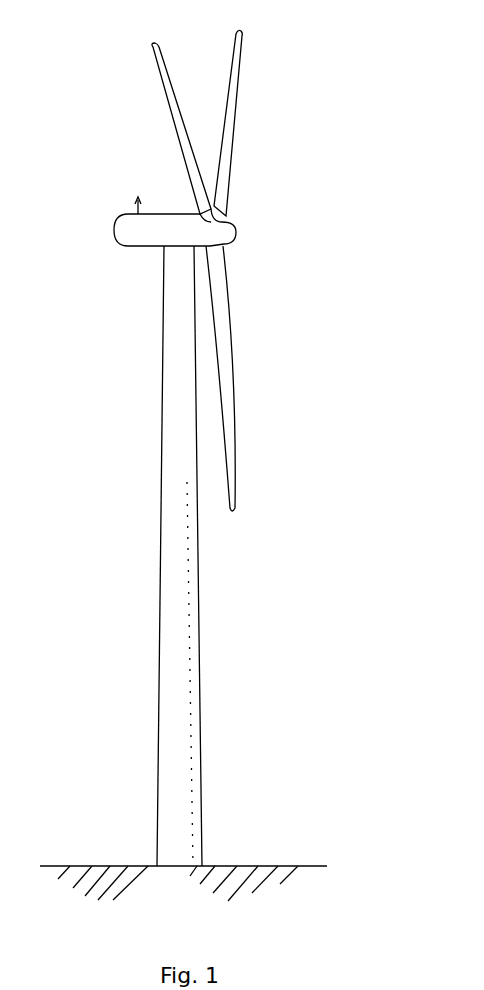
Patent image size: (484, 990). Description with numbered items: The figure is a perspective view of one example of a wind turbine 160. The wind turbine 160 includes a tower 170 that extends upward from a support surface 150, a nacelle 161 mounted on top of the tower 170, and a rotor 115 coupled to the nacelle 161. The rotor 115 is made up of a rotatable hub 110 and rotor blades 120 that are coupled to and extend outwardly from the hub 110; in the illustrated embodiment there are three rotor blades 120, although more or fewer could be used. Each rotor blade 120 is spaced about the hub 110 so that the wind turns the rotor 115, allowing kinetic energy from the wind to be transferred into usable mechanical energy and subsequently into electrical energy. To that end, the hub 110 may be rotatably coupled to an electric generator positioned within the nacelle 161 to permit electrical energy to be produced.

The hub 110 is at (236, 238).
The rotor 115 is at (236, 265).
The rotor blade 120 is at (228, 62).
The support surface 150 is at (102, 865).
The wind turbine 160 is at (348, 53).
The nacelle 161 is at (147, 247).
The tower 170 is at (160, 645).